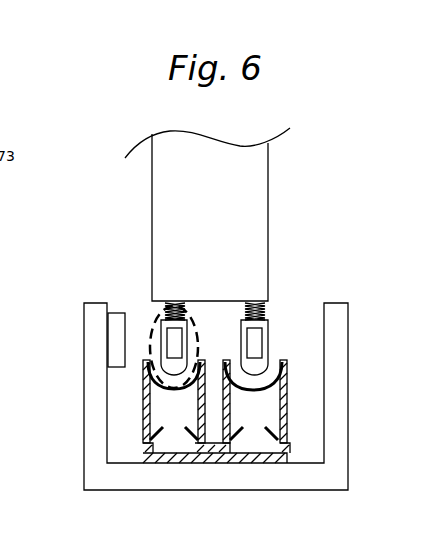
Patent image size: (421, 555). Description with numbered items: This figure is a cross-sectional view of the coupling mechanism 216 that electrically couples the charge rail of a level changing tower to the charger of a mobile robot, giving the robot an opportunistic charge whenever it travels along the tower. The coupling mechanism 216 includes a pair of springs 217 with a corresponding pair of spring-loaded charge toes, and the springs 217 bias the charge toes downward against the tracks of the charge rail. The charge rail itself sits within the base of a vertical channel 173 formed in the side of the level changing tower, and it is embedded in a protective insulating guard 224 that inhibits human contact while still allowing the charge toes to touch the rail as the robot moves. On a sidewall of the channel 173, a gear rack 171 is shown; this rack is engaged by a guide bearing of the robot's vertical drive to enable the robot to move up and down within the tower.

The gear rack 171 is at (115, 338).
The vertical channel 173 is at (178, 490).
The coupling mechanism 216 is at (155, 323).
The spring 217 is at (267, 308).
The protective insulating guard 224 is at (237, 450).